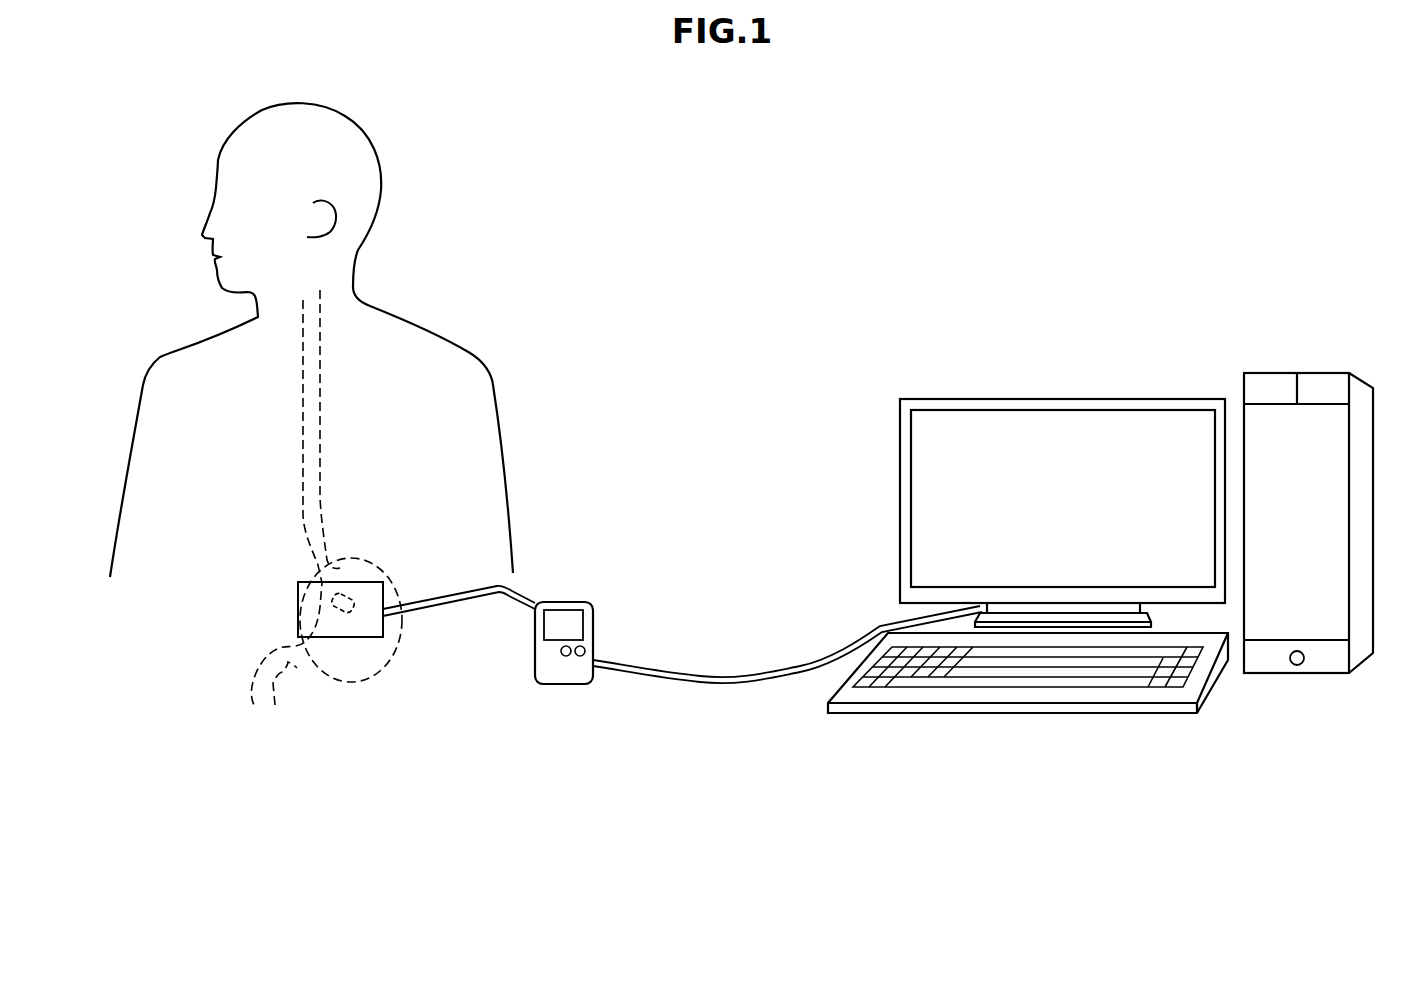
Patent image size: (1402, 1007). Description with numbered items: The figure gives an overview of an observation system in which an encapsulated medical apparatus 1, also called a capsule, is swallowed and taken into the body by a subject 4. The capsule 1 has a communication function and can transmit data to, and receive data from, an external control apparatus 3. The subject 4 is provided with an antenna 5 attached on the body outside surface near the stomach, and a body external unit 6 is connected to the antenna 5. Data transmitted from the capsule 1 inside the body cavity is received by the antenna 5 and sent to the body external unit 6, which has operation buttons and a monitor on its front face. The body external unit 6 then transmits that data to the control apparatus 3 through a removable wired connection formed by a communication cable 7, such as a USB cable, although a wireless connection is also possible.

The encapsulated medical apparatus 1 is at (343, 613).
The control apparatus 3 is at (1183, 343).
The subject 4 is at (188, 367).
The antenna 5 is at (373, 582).
The body external unit 6 is at (565, 602).
The communication cable 7 is at (702, 682).